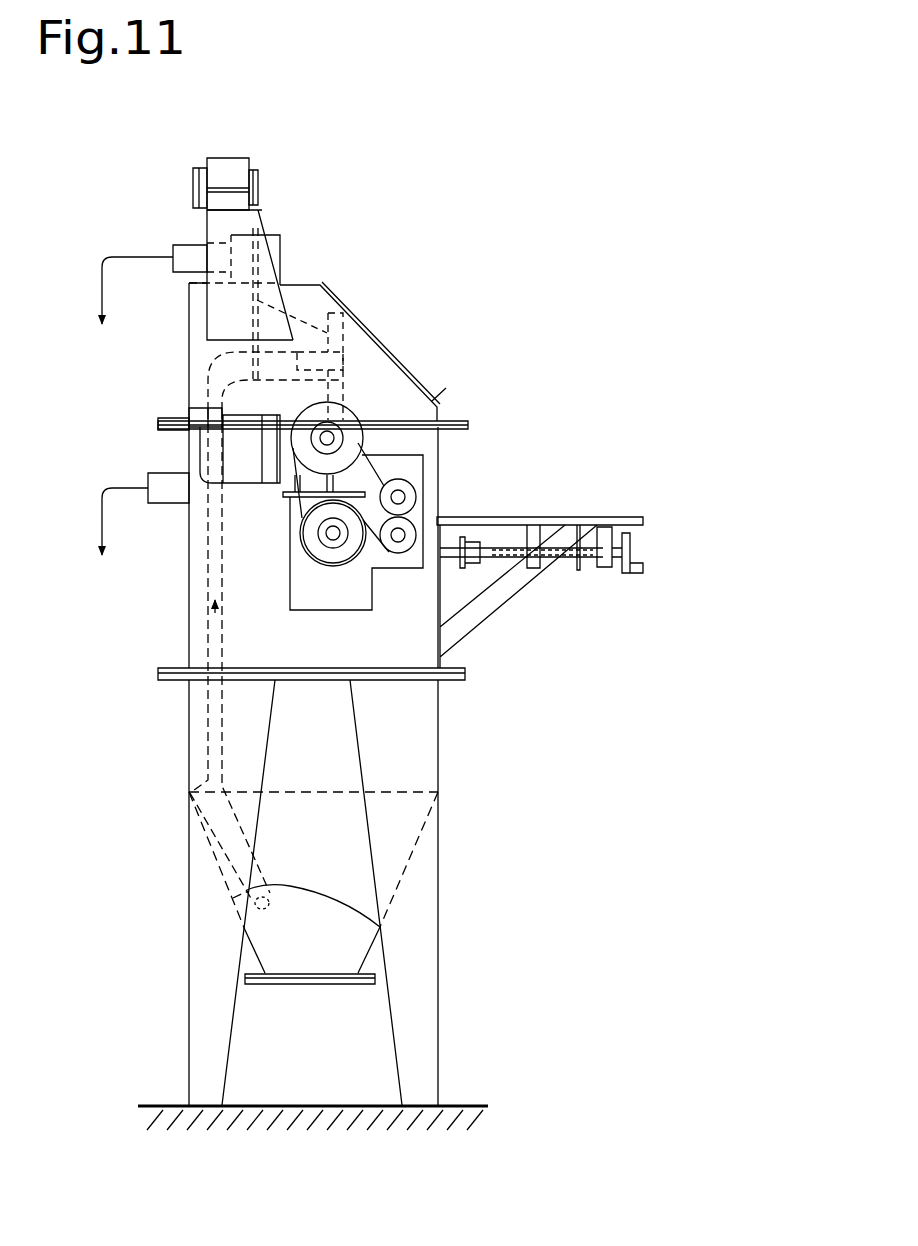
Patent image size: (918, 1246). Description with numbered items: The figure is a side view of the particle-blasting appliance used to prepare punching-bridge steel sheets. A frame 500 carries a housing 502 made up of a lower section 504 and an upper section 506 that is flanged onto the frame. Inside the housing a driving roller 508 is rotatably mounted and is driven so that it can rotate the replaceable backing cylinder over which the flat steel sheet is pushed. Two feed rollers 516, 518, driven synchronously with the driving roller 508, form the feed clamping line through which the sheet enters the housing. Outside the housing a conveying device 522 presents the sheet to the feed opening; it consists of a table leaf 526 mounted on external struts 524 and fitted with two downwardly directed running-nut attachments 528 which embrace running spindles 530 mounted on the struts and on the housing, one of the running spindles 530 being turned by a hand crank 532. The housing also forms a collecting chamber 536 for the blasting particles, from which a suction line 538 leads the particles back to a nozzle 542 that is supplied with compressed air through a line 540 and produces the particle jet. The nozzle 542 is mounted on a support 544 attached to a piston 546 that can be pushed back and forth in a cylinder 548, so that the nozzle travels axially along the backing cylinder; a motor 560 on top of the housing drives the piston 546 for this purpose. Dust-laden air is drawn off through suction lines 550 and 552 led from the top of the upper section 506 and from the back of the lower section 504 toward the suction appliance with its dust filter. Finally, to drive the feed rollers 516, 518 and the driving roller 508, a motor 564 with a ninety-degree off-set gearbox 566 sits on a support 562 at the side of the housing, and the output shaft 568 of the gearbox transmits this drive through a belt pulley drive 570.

The frame 500 is at (186, 912).
The housing 502 is at (186, 384).
The lower section 504 is at (190, 587).
The upper section 506 is at (189, 327).
The driving roller 508 is at (340, 548).
The feed roller 516 is at (412, 492).
The feed roller 518 is at (398, 553).
The conveying device 522 is at (555, 607).
The external struts 524 is at (538, 574).
The table leaf 526 is at (628, 517).
The running-nut attachments 528 is at (533, 517).
The running spindles 530 is at (497, 550).
The hand crank 532 is at (631, 574).
The collecting chamber 536 is at (360, 898).
The suction line 538 is at (213, 750).
The line 540 is at (340, 328).
The nozzle 542 is at (337, 400).
The support 544 is at (258, 226).
The piston 546 is at (260, 177).
The cylinder 548 is at (233, 166).
The suction line 550 is at (190, 252).
The suction line 552 is at (174, 493).
The motor 560 is at (200, 188).
The support 562 is at (299, 504).
The motor 564 is at (237, 460).
The 90° off-set gearbox 566 is at (360, 462).
The output shaft 568 is at (295, 476).
The belt pulley drive 570 is at (381, 477).